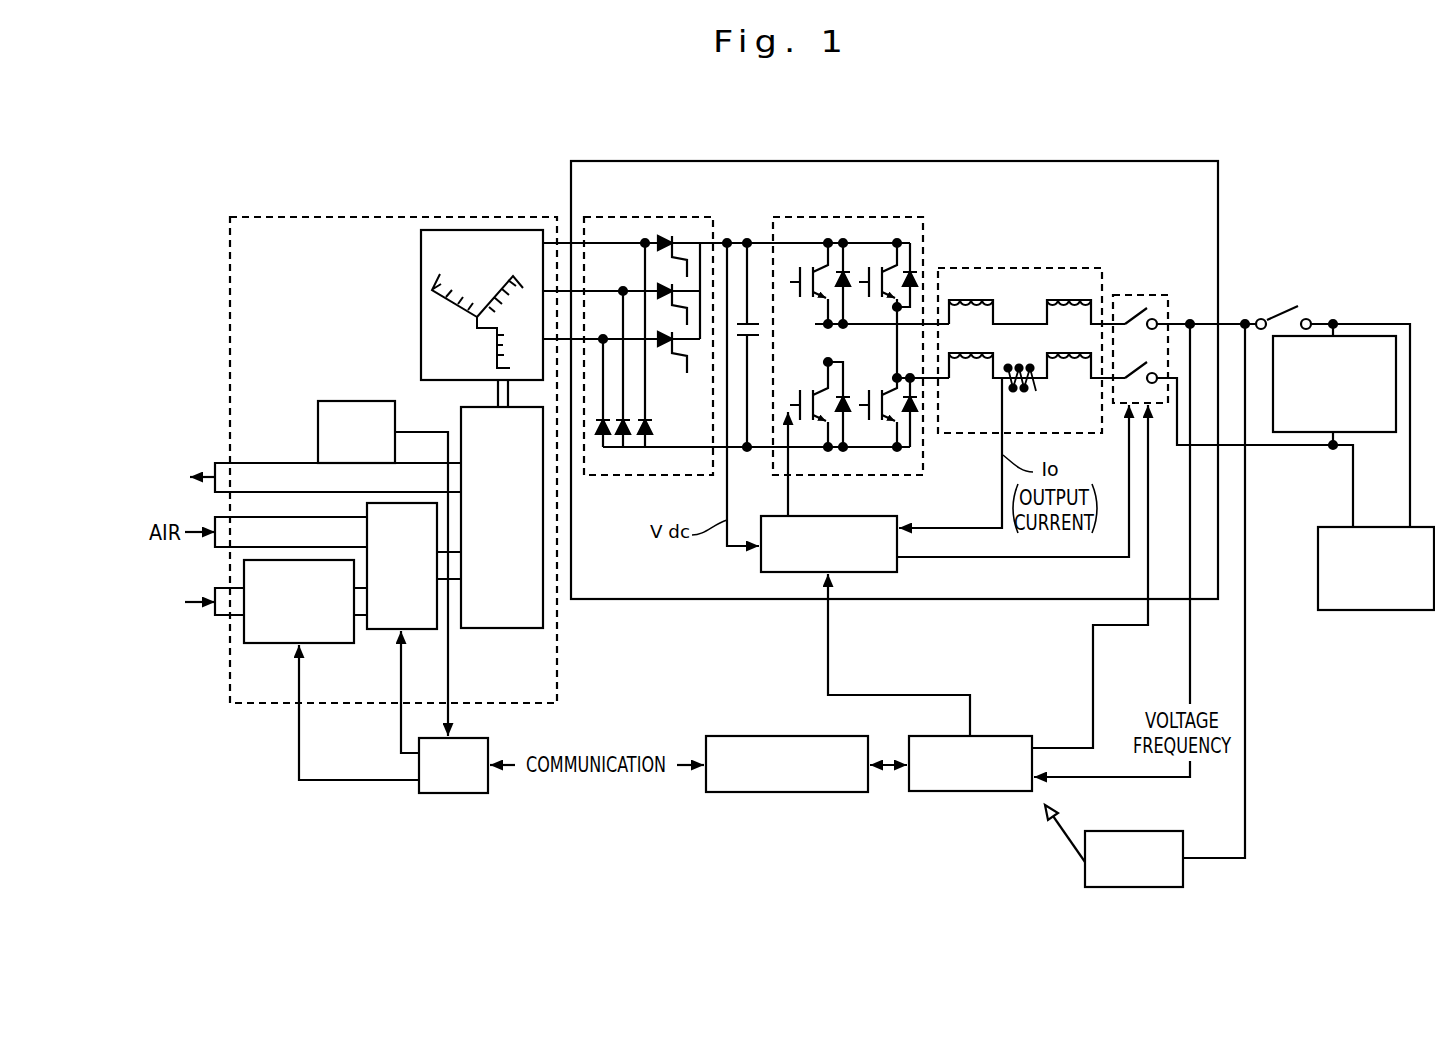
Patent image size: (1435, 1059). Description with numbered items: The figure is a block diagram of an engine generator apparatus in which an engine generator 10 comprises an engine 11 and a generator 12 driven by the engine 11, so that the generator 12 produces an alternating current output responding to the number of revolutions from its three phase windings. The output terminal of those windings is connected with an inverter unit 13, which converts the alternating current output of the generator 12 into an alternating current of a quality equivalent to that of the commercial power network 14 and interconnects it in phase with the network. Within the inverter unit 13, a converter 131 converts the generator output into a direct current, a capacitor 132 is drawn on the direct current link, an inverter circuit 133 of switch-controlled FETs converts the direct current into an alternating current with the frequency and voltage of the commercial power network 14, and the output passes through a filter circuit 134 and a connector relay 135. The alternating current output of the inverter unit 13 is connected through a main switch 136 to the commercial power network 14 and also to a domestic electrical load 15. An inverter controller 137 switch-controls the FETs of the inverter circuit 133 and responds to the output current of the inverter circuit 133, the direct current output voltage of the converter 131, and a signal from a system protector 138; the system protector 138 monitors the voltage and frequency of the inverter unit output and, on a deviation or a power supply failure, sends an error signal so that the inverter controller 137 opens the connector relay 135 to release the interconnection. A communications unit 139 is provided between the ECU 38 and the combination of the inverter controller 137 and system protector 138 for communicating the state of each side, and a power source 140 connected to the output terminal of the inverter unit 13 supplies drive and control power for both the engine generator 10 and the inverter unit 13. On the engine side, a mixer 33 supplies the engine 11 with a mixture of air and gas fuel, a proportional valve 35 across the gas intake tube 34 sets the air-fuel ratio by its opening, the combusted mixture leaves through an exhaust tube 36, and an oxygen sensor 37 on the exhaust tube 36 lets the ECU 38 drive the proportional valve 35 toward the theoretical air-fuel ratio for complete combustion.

The engine generator 10 is at (388, 217).
The engine 11 is at (505, 628).
The generator 12 is at (421, 248).
The inverter unit 13 is at (722, 161).
The commercial power network 14 is at (1318, 572).
The domestic electrical load 15 is at (1307, 432).
The mixer 33 is at (415, 629).
The gas intake tube 34 is at (225, 618).
The proportional valve 35 is at (318, 643).
The exhaust tube 36 is at (220, 463).
The oxygen sensor 37 is at (343, 401).
The ECU 38 is at (445, 793).
The converter 131 is at (612, 217).
The smoothing capacitor 132 is at (754, 345).
The inverter circuit 133 is at (832, 217).
The filter circuit 134 is at (1027, 268).
The connector relay 135 is at (1137, 295).
The main switch 136 is at (1267, 305).
The inverter controller 137 is at (863, 516).
The system protector 138 is at (940, 791).
The communications unit 139 is at (780, 792).
The power source 140 is at (1155, 831).